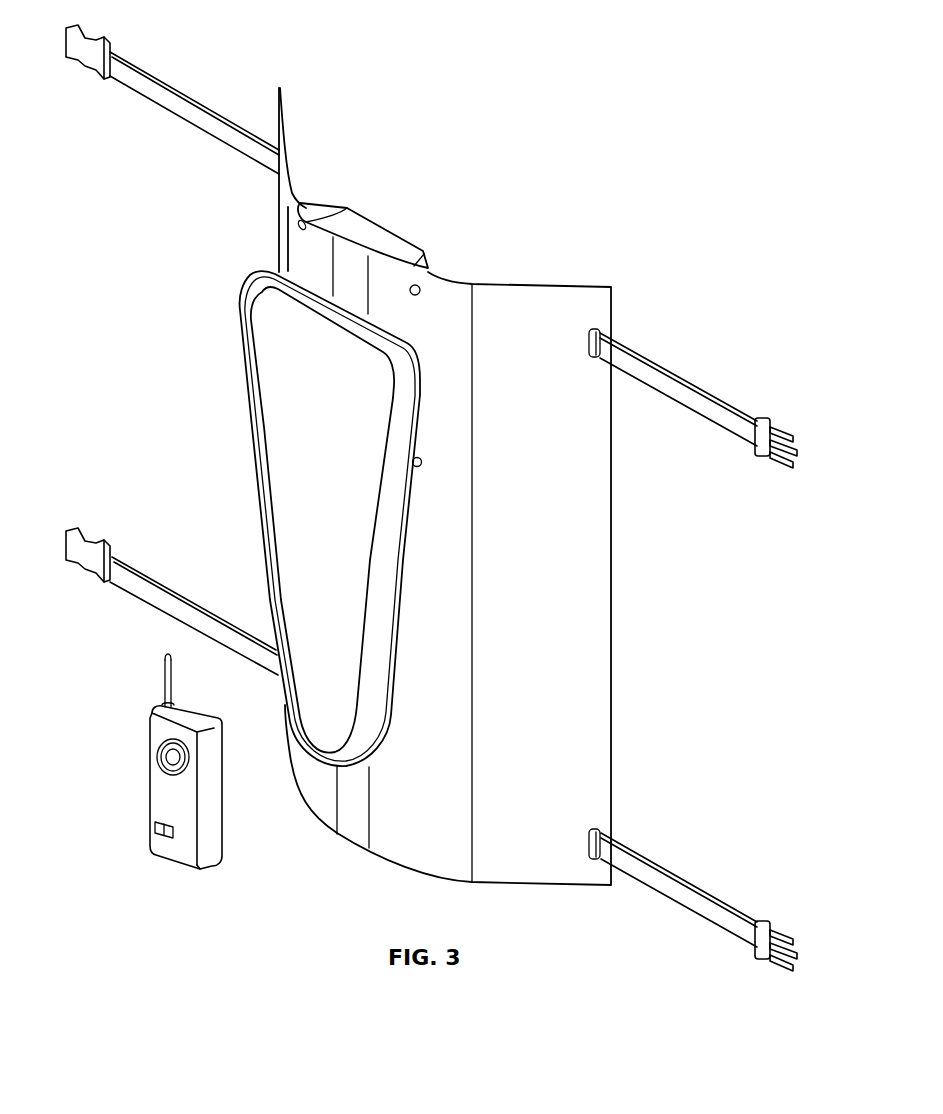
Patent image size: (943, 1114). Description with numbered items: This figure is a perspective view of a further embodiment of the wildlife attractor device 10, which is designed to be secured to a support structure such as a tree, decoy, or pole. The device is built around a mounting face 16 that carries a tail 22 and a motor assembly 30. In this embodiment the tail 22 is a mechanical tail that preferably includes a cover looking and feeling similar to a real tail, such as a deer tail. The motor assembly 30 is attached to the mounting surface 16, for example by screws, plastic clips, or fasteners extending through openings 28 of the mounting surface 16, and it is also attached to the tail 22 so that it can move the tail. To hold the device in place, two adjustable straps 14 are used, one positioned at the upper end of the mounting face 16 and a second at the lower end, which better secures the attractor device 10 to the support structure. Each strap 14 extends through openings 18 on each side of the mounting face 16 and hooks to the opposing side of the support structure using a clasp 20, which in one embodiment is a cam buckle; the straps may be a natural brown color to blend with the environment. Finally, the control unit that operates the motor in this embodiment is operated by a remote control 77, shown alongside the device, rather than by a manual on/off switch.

The wildlife attractor device 10 is at (584, 221).
The adjustable strap 14 is at (197, 110).
The mounting face 16 is at (570, 583).
The openings 18 is at (598, 333).
The clasp 20 is at (106, 43).
The tail 22 is at (288, 460).
The openings 28 is at (300, 229).
The motor assembly 30 is at (350, 189).
The remote control 77 is at (163, 793).